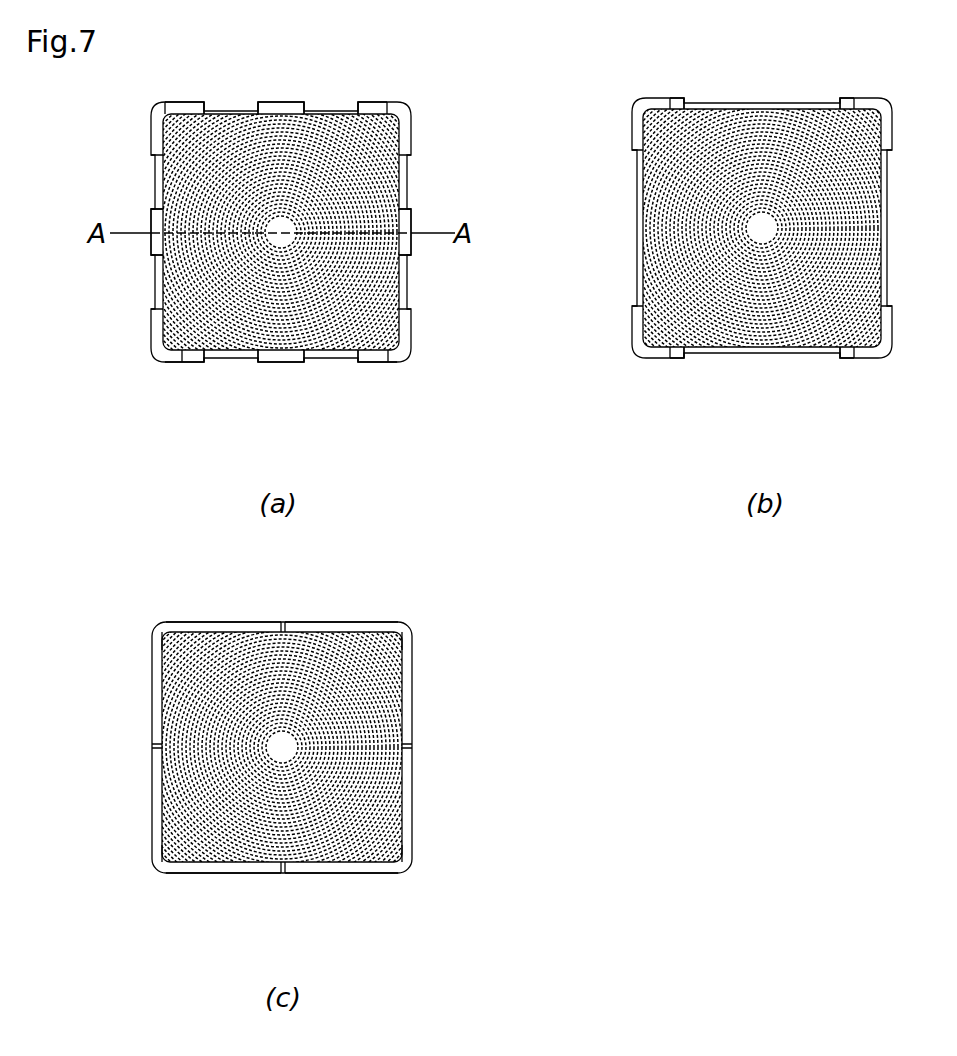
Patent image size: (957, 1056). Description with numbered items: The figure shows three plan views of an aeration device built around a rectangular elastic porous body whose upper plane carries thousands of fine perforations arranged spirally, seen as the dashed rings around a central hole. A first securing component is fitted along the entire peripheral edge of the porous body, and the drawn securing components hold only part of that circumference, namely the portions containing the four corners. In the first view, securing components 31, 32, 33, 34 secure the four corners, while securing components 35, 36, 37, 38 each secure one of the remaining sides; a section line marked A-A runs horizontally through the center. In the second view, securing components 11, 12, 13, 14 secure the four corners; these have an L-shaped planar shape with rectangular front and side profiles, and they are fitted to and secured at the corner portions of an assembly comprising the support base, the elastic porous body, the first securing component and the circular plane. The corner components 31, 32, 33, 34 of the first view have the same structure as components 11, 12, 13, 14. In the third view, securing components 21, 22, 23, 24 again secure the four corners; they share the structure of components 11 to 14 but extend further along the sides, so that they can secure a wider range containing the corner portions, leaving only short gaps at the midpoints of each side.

The securing component 11 is at (668, 100).
The securing component 12 is at (856, 100).
The securing component 13 is at (853, 358).
The securing component 14 is at (668, 358).
The securing component 21 is at (205, 630).
The securing component 22 is at (355, 630).
The securing component 23 is at (358, 865).
The securing component 24 is at (197, 865).
The securing component 31 is at (178, 110).
The securing component 32 is at (374, 108).
The securing component 33 is at (388, 352).
The securing component 34 is at (182, 363).
The securing component 35 is at (278, 108).
The securing component 36 is at (411, 248).
The securing component 37 is at (282, 352).
The securing component 38 is at (150, 242).